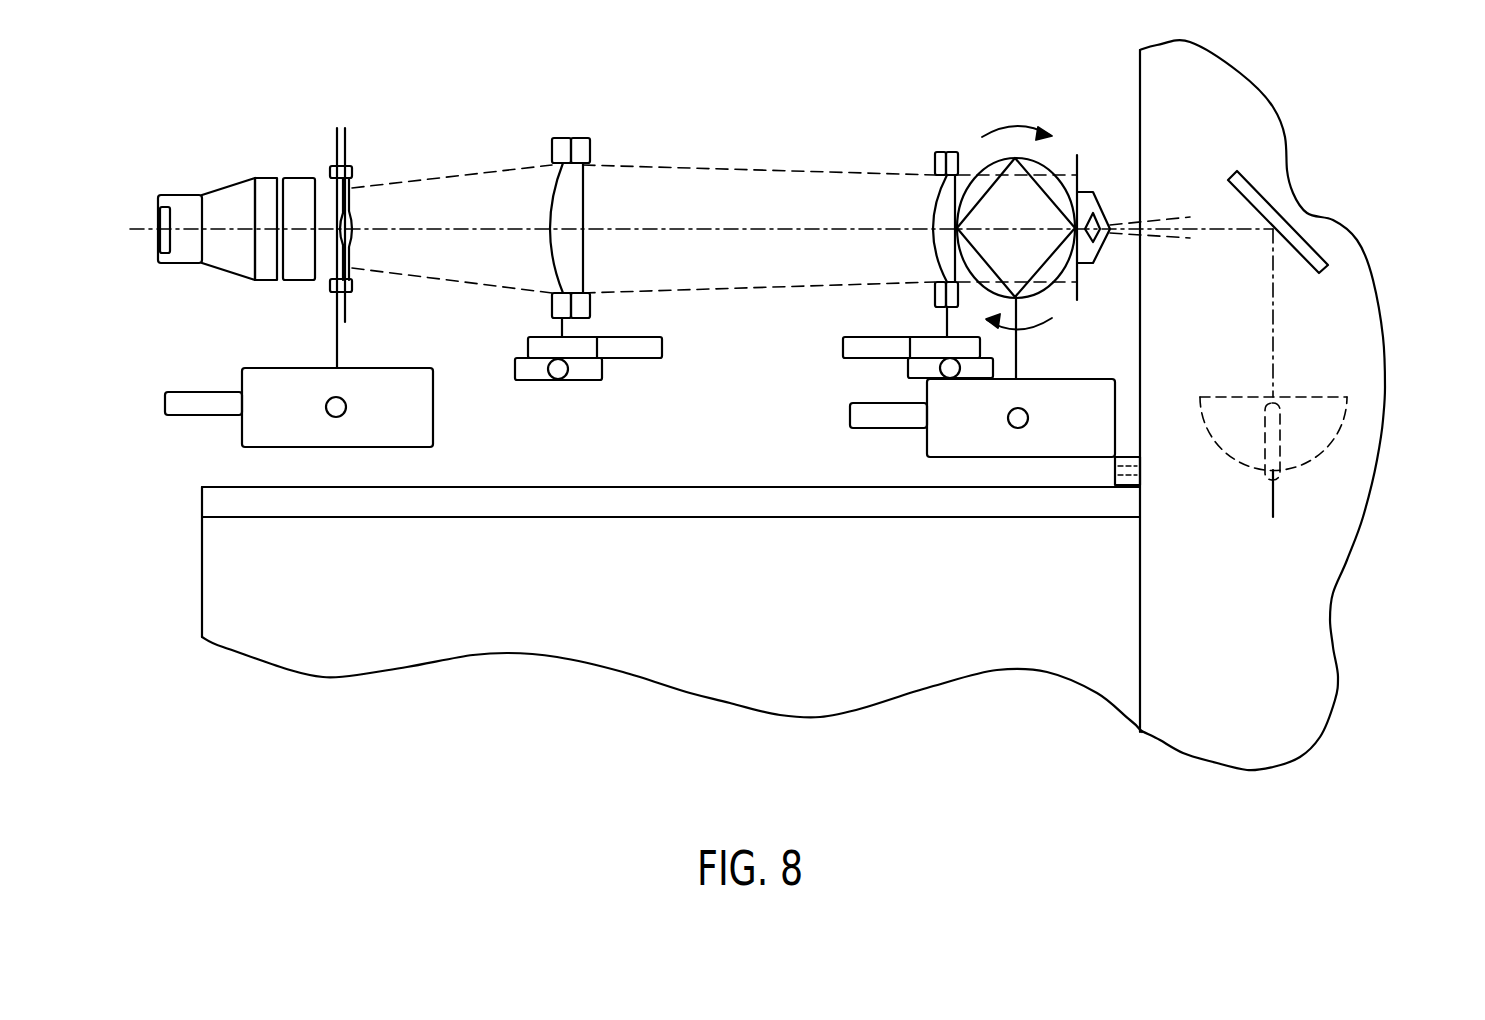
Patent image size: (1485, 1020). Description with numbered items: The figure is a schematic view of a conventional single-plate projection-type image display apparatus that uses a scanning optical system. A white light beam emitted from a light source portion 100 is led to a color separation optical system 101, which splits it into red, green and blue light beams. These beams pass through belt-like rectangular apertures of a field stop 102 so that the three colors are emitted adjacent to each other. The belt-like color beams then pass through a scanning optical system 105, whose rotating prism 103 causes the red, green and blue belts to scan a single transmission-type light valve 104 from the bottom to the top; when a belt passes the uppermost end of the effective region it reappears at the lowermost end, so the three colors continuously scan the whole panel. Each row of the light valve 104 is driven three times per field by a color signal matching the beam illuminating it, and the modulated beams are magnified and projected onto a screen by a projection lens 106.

The light source portion 100 is at (1397, 385).
The color separation optical system 101 is at (1130, 146).
The field stop 102 is at (1072, 163).
The rotating prism 103 is at (977, 175).
The light valve 104 is at (360, 152).
The scanning optical system 105 is at (1020, 108).
The projection lens 106 is at (268, 177).